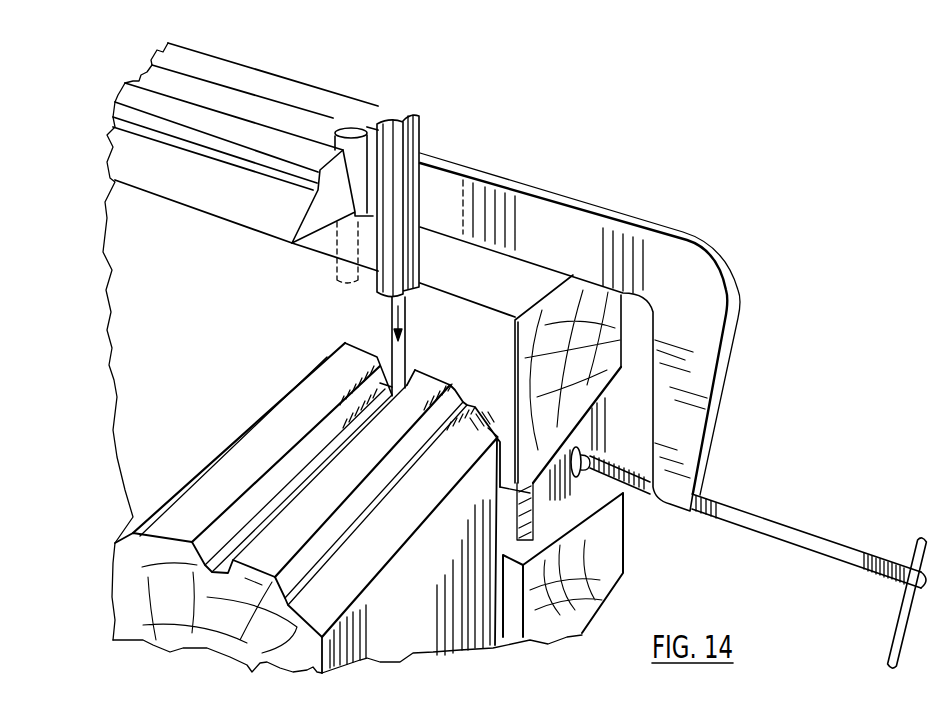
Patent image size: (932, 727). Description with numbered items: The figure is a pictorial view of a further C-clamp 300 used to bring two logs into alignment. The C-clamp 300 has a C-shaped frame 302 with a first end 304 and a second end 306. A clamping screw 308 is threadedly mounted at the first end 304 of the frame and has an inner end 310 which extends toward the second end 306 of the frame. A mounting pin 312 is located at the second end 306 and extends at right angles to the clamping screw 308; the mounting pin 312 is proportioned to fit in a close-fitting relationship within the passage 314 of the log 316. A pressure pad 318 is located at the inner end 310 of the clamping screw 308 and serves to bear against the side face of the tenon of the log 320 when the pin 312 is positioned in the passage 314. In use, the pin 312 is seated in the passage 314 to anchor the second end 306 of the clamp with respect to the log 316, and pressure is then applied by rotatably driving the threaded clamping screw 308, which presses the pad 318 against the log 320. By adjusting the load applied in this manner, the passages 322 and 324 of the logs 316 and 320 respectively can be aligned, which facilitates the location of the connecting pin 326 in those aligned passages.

The C-clamp 300 is at (547, 190).
The C-shaped frame 302 is at (593, 228).
The first end 304 is at (688, 400).
The second end 306 is at (350, 133).
The clamping screw 308 is at (780, 532).
The inner end 310 is at (628, 487).
The mounting pin 312 is at (320, 173).
The passage 314 is at (335, 272).
The log 316 is at (123, 208).
The pressure pad 318 is at (567, 493).
The log 320 is at (467, 618).
The passage 322 is at (407, 342).
The passage 324 is at (377, 362).
The connecting pin 326 is at (420, 143).